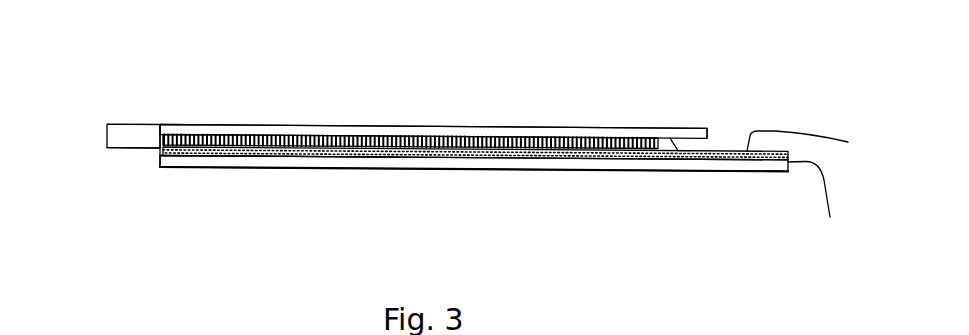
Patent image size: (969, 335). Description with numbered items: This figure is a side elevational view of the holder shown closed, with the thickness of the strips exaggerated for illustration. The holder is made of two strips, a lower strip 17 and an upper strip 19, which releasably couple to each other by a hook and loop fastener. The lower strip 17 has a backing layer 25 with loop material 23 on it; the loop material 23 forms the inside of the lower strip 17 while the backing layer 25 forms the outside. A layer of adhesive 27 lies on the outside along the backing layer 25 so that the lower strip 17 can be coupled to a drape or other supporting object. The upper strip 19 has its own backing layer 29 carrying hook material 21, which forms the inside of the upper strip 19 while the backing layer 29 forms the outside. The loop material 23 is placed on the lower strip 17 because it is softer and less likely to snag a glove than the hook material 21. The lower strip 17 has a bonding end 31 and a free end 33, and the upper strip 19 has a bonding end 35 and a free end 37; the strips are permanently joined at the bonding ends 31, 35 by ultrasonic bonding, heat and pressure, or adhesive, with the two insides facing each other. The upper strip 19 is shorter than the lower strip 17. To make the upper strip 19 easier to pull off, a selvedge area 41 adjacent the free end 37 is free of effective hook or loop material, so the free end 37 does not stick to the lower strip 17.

The lower strip 17 is at (608, 164).
The upper strip 19 is at (450, 126).
The hook material 21 is at (575, 140).
The loop material 23 is at (817, 141).
The backing layer 25 is at (252, 160).
The adhesive 27 is at (440, 168).
The backing layer 29 is at (328, 130).
The bonding end 31 is at (145, 148).
The free end 33 is at (816, 209).
The bonding end 35 is at (147, 125).
The free end 37 is at (710, 129).
The selvedge area 41 is at (692, 150).